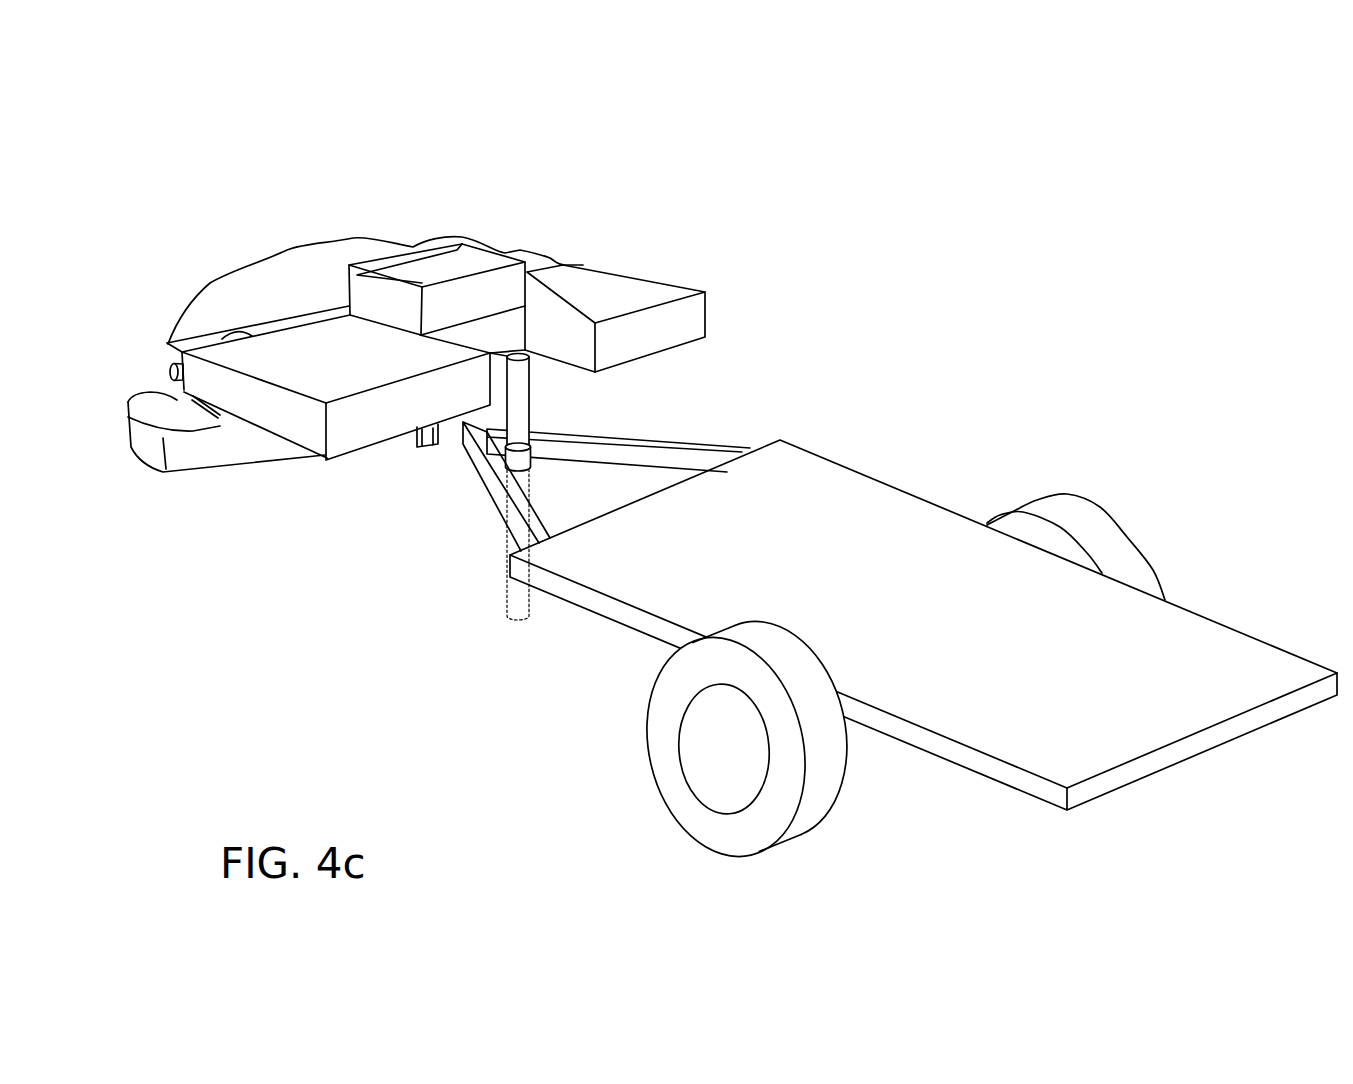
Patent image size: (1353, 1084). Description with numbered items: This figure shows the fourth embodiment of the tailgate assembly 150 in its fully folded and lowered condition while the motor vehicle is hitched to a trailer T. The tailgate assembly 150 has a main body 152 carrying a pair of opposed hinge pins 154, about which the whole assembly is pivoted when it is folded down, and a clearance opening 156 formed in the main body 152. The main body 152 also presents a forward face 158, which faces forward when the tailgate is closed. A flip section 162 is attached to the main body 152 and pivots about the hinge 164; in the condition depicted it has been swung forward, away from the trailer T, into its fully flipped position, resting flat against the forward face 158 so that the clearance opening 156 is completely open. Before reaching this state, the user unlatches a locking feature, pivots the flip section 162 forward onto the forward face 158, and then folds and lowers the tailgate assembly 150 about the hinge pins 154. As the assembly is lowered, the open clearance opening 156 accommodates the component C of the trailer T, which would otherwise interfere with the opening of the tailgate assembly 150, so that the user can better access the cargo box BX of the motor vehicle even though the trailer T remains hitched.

The tailgate assembly 150 is at (412, 344).
The main body 152 is at (280, 413).
The hinge pins 154 is at (170, 372).
The clearance opening 156 is at (563, 333).
The forward face 158 is at (647, 297).
The flip section 162 is at (472, 265).
The hinge 164 is at (507, 313).
The cargo box BX is at (280, 285).
The component of the trailer C is at (520, 398).
The trailer T is at (887, 538).